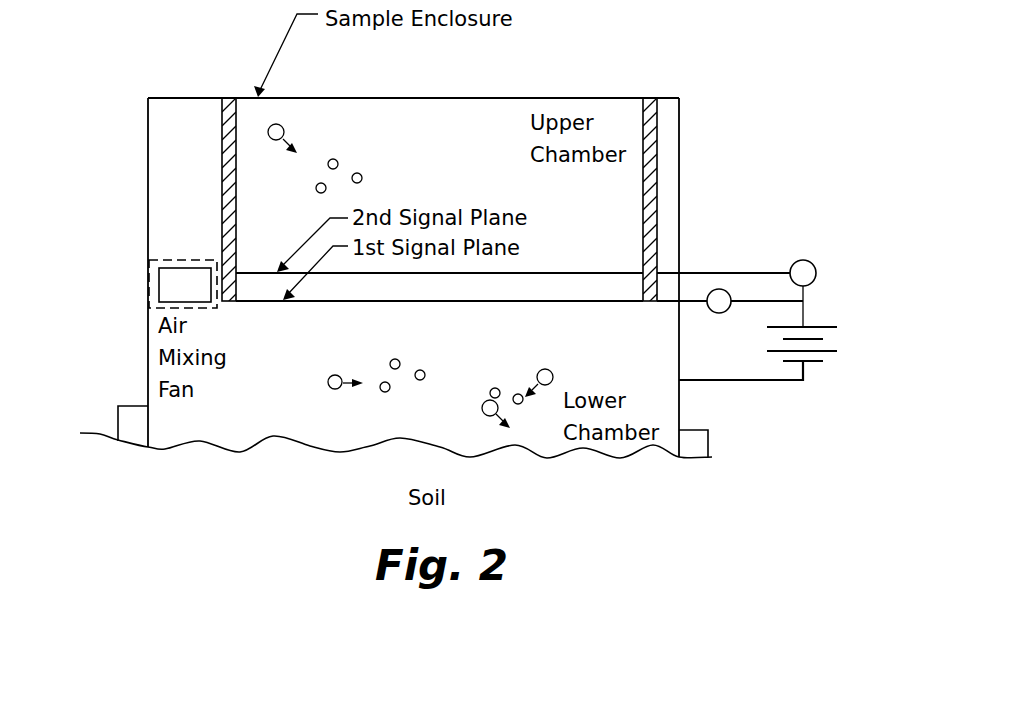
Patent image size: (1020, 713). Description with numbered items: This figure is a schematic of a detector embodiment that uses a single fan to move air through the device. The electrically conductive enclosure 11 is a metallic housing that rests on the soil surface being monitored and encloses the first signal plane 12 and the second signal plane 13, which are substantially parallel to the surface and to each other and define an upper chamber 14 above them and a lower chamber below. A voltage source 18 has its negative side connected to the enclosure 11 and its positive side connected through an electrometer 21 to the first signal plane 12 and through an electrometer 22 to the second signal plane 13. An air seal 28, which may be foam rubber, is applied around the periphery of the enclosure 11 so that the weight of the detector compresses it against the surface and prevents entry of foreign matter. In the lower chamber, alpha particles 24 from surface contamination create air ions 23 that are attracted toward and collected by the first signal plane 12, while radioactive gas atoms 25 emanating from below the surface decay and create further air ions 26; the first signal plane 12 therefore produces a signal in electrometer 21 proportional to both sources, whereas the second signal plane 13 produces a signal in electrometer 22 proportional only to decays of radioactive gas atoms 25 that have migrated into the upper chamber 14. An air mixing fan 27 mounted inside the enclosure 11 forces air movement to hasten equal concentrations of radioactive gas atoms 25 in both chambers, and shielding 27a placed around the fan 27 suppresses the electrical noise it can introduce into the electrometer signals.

The electrically conductive enclosure 11 is at (148, 128).
The first signal plane 12 is at (508, 302).
The second signal plane 13 is at (547, 273).
The upper chamber 14 is at (630, 185).
The voltage source 18 is at (837, 340).
The electrometer 21 is at (726, 312).
The electrometer 22 is at (816, 270).
The air ions 23 is at (424, 380).
The alpha particles 24 is at (327, 383).
The radioactive gas atoms 25 is at (282, 124).
The air ions 26 is at (335, 158).
The air mixing fan 27 is at (170, 268).
The shielding 27a is at (178, 262).
The air seal 28 is at (128, 406).